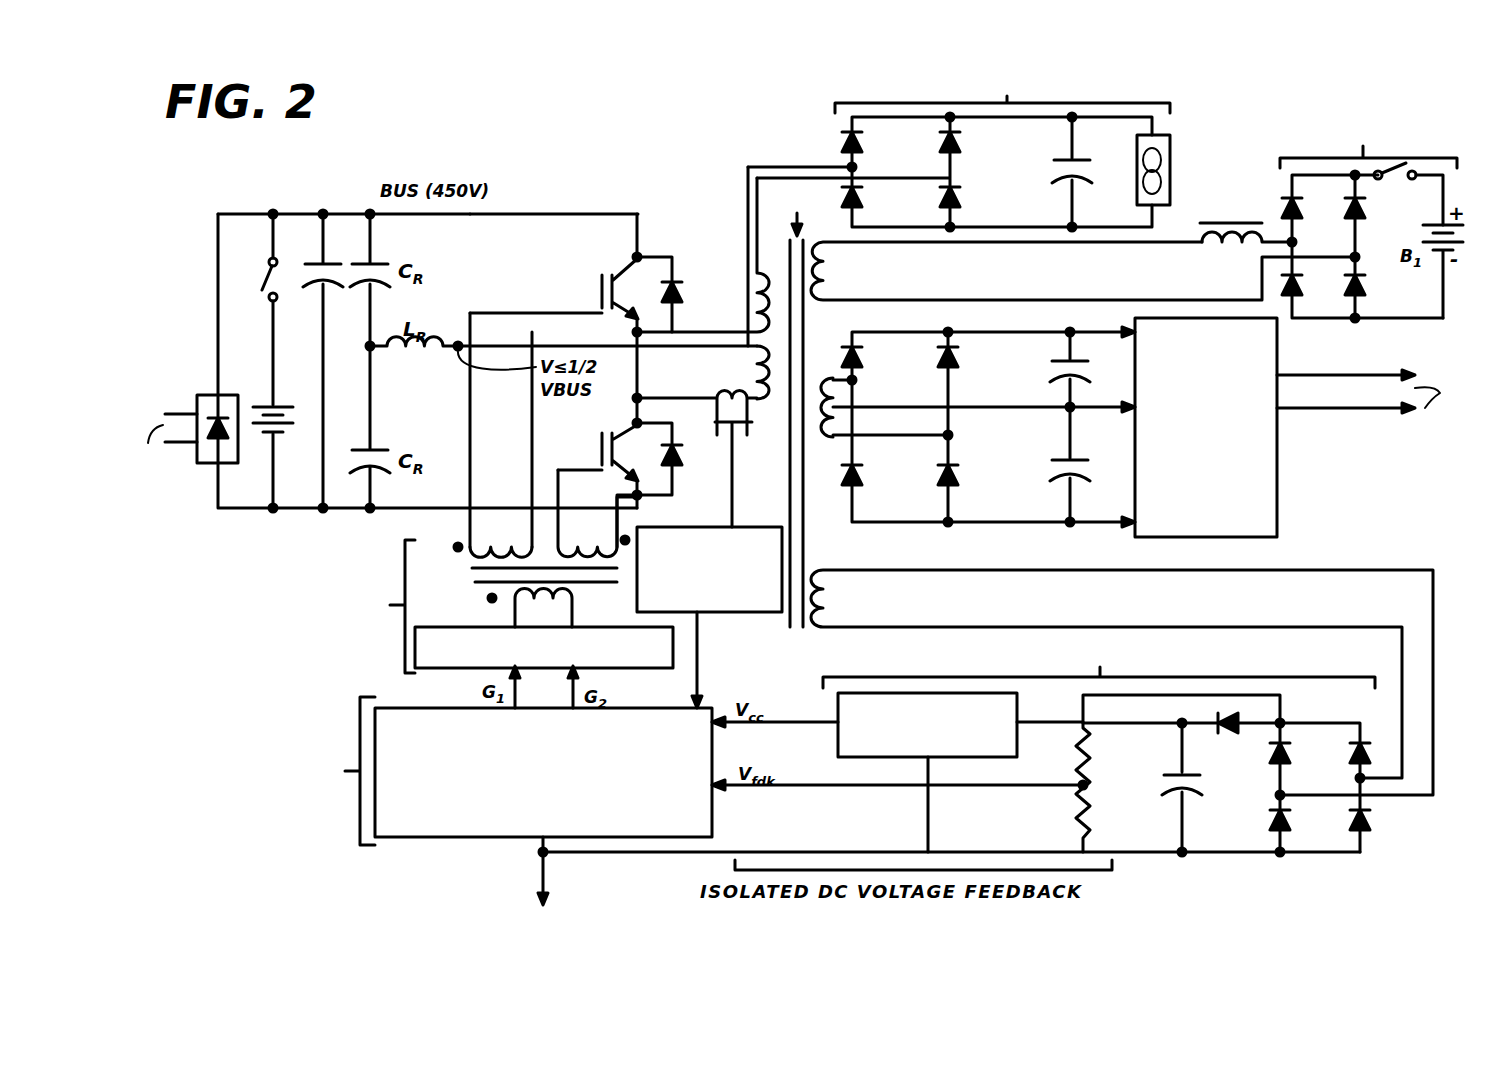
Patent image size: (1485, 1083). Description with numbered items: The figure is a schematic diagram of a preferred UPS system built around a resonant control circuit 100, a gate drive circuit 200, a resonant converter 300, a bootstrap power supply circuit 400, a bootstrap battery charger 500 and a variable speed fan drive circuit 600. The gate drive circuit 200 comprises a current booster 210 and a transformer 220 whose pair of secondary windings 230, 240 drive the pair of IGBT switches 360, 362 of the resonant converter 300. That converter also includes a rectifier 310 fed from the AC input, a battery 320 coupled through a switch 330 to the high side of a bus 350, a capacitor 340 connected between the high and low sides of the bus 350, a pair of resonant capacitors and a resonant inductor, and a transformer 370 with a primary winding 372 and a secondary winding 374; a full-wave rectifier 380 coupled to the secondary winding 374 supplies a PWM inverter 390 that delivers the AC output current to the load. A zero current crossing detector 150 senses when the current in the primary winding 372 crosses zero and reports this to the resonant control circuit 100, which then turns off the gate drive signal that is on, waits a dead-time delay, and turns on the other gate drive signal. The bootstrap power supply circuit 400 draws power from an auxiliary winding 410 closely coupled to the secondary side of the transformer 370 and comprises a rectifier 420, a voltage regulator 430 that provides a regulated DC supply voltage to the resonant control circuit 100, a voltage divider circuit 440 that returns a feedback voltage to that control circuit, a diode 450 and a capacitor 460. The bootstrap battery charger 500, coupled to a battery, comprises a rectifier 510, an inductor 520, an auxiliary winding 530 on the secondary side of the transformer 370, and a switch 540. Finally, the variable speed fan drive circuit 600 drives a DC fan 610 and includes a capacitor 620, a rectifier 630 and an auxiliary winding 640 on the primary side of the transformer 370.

The resonant control circuit 100 is at (358, 815).
The zero current crossing detector 150 is at (752, 614).
The gate drive circuit 200 is at (402, 630).
The current booster 210 is at (440, 670).
The transformer 220 is at (468, 572).
The secondary winding 230 is at (478, 526).
The secondary winding 240 is at (598, 538).
The resonant converter 300 is at (545, 207).
The rectifier 310 is at (236, 463).
The battery 320 is at (265, 392).
The switch 330 is at (262, 280).
The capacitor 340 is at (311, 258).
The bus 350 is at (478, 216).
The IGBT switch 360 is at (647, 254).
The IGBT switch 362 is at (588, 445).
The transformer 370 is at (793, 402).
The primary winding 372 is at (755, 350).
The secondary winding 374 is at (840, 401).
The full-wave rectifier 380 is at (864, 318).
The PWM inverter 390 is at (1281, 430).
The bootstrap power supply circuit 400 is at (1318, 564).
The auxiliary winding 410 is at (825, 599).
The rectifier 420 is at (1300, 855).
The voltage regulator 430 is at (876, 759).
The voltage divider circuit 440 is at (1135, 757).
The diode 450 is at (1215, 729).
The capacitor 460 is at (1197, 788).
The bootstrap battery charger 500 is at (1293, 159).
The rectifier 510 is at (1305, 173).
The inductor 520 is at (1238, 244).
The auxiliary winding 530 is at (825, 261).
The switch 540 is at (1397, 177).
The variable speed fan drive circuit 600 is at (833, 108).
The DC fan 610 is at (1172, 147).
The capacitor 620 is at (1060, 172).
The rectifier 630 is at (963, 149).
The auxiliary winding 640 is at (752, 302).